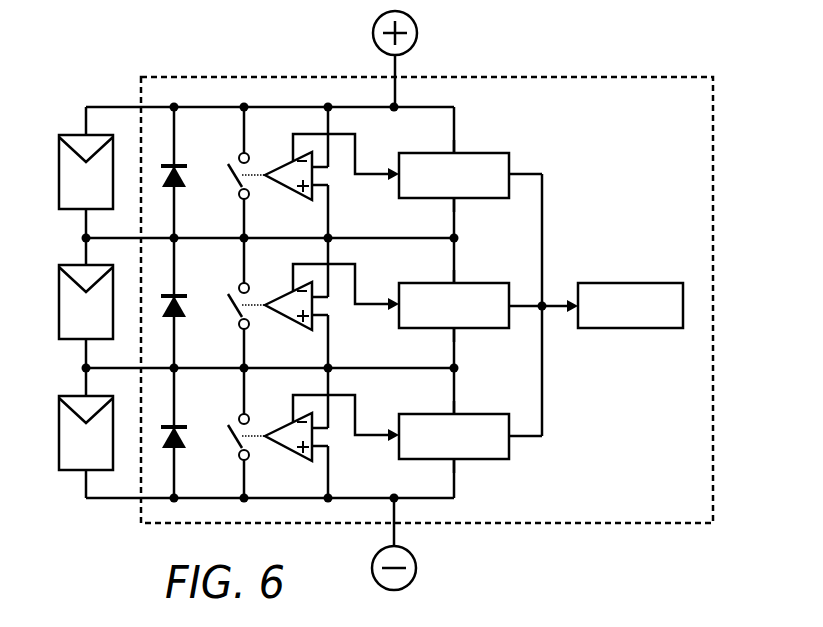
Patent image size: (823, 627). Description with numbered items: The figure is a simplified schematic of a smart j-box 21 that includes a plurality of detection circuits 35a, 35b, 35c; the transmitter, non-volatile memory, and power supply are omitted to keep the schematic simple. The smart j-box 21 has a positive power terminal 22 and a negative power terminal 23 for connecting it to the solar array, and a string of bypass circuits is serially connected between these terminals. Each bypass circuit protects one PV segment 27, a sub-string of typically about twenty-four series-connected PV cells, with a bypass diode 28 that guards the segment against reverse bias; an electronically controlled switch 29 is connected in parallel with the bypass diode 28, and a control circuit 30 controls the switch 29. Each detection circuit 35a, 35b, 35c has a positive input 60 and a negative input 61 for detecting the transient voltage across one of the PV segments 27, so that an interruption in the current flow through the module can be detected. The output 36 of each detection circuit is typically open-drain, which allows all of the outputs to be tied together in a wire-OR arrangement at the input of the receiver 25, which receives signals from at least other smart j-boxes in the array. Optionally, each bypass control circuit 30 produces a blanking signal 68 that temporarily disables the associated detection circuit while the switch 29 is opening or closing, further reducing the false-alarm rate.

The smart j-box 21 is at (164, 76).
The positive power terminal 22 is at (417, 33).
The negative power terminal 23 is at (417, 567).
The receiver circuit 25 is at (620, 283).
The PV segment 27 is at (59, 173).
The bypass diode 28 is at (188, 166).
The electronically controlled switch 29 is at (233, 182).
The control circuit 30 is at (281, 187).
The detection circuit 35a is at (494, 152).
The detection circuit 35b is at (470, 284).
The detection circuit 35c is at (470, 415).
The output 36 is at (542, 182).
The positive input 60 is at (452, 151).
The negative input 61 is at (452, 201).
The blanking signal 68 is at (365, 178).